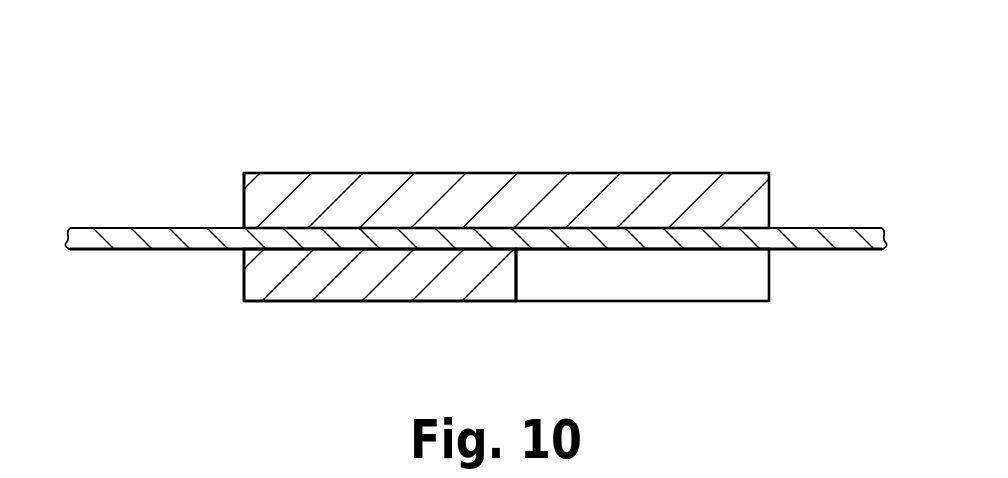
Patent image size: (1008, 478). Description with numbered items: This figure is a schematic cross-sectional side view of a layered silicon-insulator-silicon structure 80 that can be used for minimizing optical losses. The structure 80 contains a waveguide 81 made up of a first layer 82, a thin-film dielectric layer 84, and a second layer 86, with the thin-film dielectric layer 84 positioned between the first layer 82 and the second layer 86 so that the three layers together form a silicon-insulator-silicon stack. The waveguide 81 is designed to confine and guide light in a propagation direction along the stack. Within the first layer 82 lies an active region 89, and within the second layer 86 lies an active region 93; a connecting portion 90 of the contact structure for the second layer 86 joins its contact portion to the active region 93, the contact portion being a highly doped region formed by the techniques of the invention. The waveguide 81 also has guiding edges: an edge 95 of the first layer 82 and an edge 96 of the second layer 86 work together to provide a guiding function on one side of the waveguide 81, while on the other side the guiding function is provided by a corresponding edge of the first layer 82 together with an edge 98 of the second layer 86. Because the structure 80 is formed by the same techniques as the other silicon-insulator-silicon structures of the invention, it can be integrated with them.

The layered silicon-insulator-silicon structure 80 is at (475, 213).
The waveguide 81 is at (378, 308).
The first layer 82 is at (293, 207).
The thin-film dielectric layer 84 is at (830, 227).
The second layer 86 is at (272, 275).
The active region 89 is at (404, 205).
The connecting portion 90 is at (673, 292).
The active region 93 is at (458, 283).
The edge 95 is at (244, 206).
The edge 96 is at (244, 285).
The edge 98 is at (517, 281).